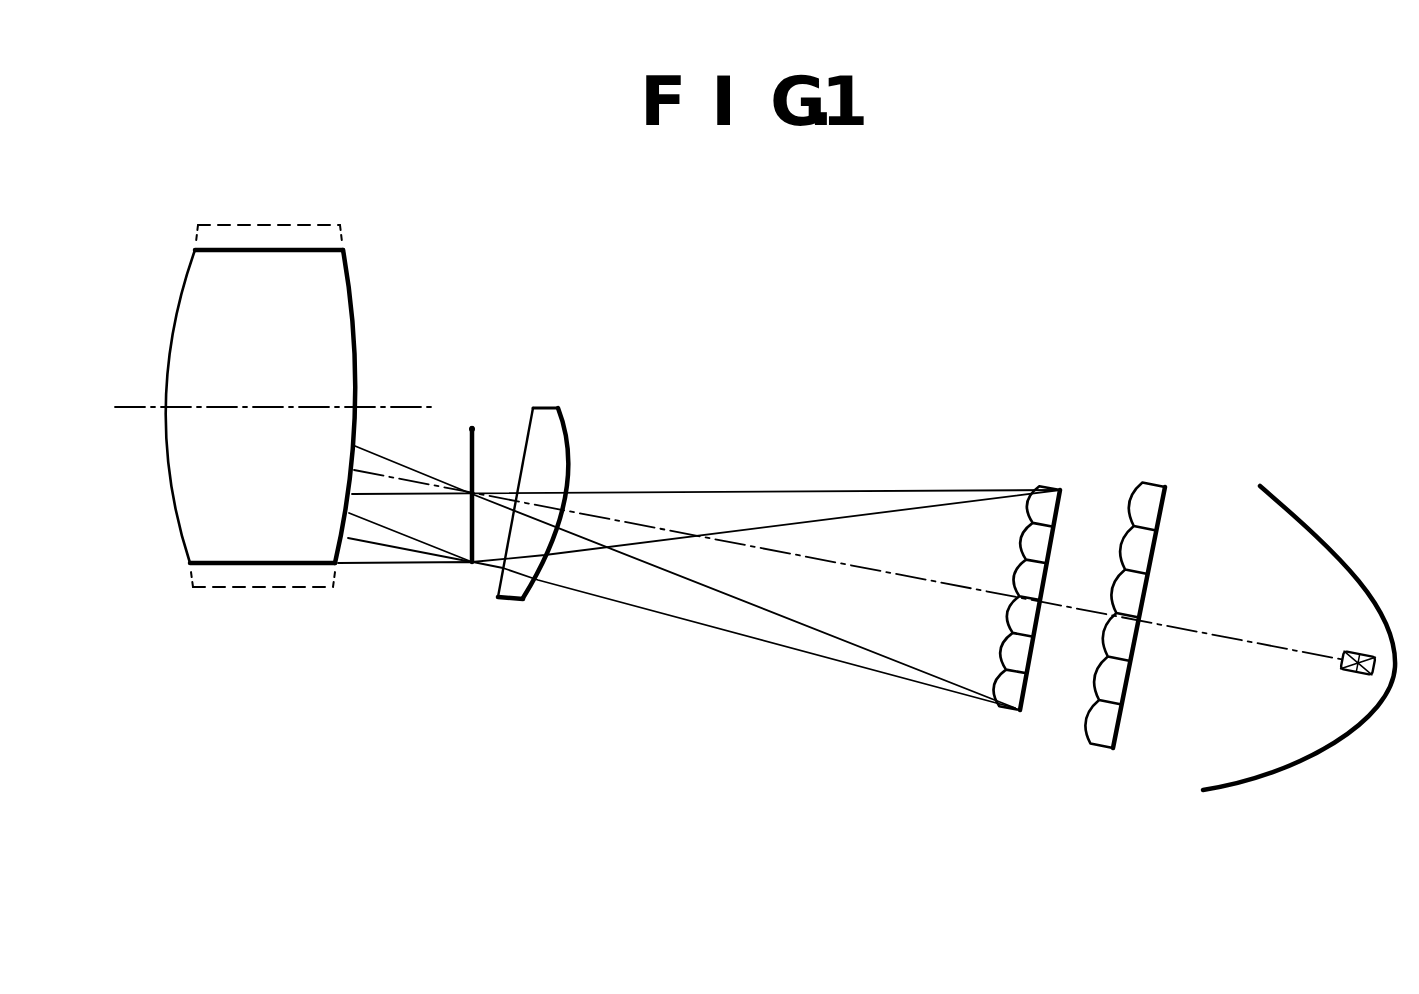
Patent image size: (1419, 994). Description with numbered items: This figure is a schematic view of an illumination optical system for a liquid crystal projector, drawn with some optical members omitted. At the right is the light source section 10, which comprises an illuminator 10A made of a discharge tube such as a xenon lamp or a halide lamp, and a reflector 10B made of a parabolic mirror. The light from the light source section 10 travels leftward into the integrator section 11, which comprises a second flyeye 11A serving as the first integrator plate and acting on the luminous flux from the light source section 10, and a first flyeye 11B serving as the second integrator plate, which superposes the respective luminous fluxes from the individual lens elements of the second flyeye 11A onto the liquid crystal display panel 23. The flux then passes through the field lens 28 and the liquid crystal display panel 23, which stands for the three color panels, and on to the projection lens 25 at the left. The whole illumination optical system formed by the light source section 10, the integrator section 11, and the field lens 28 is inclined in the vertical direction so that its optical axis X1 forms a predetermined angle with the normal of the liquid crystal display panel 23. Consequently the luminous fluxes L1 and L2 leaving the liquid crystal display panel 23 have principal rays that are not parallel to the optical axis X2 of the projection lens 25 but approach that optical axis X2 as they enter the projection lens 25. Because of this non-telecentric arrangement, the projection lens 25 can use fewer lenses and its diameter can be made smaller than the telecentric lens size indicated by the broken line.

The light source section 10 is at (1266, 607).
The illuminator 10A is at (1350, 655).
The reflector 10B is at (1213, 783).
The integrator section 11 is at (1105, 551).
The second flyeye (first integrator plate) 11A is at (1166, 487).
The first flyeye (second integrator plate) 11B is at (1058, 488).
The liquid crystal display panel 23 is at (472, 428).
The projection lens 25 is at (350, 284).
The field lens 28 is at (570, 433).
The first light beam L1 is at (821, 500).
The second light beam L2 is at (397, 558).
The optical axis of the illumination optical system X1 is at (893, 577).
The optical axis of the projection lens X2 is at (399, 407).